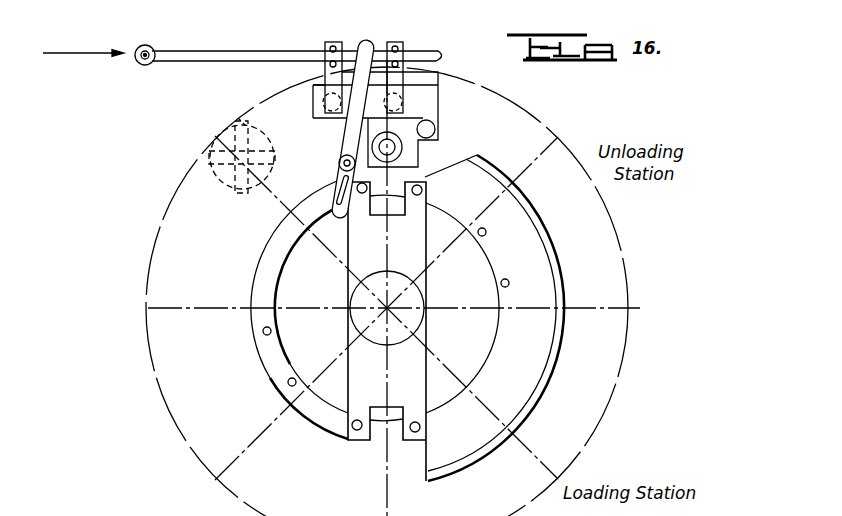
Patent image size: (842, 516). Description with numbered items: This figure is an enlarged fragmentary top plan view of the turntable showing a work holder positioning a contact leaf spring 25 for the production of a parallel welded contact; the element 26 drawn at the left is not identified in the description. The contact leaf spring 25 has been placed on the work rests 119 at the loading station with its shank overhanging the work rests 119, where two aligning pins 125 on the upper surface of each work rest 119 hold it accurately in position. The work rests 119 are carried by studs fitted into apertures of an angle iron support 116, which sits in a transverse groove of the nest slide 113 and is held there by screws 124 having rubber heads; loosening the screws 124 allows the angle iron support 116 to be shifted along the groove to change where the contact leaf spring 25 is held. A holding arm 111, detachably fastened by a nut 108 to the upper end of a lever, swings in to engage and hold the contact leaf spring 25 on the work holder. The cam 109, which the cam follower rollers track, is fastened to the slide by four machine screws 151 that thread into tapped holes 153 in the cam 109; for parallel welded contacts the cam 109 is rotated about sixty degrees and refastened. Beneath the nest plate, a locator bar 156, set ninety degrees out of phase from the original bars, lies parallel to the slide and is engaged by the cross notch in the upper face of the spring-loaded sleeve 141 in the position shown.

The contact leaf spring 25 is at (207, 42).
The roller 26 is at (139, 65).
The nut 108 is at (339, 163).
The cam 109 is at (525, 380).
The holding arm 111 is at (367, 46).
The nest slide 113 is at (418, 160).
The angle iron support 116 is at (318, 99).
The work rest 119 is at (334, 46).
The screw 124 is at (436, 130).
The aligning pin 125 is at (330, 64).
The sleeve 141 is at (220, 176).
The machine screw 151 is at (414, 196).
The tapped hole 153 is at (506, 279).
The locator bar 156 is at (246, 121).